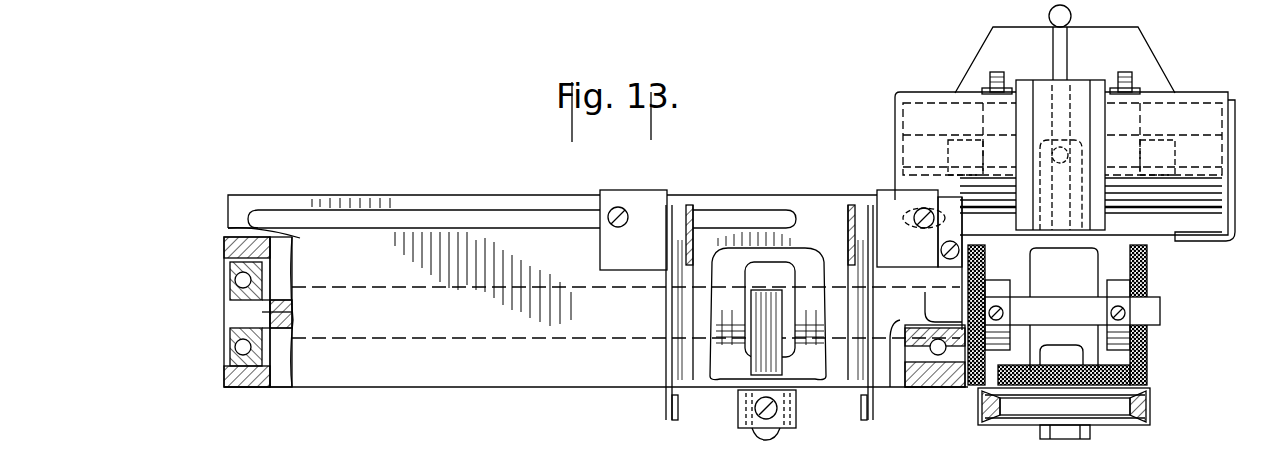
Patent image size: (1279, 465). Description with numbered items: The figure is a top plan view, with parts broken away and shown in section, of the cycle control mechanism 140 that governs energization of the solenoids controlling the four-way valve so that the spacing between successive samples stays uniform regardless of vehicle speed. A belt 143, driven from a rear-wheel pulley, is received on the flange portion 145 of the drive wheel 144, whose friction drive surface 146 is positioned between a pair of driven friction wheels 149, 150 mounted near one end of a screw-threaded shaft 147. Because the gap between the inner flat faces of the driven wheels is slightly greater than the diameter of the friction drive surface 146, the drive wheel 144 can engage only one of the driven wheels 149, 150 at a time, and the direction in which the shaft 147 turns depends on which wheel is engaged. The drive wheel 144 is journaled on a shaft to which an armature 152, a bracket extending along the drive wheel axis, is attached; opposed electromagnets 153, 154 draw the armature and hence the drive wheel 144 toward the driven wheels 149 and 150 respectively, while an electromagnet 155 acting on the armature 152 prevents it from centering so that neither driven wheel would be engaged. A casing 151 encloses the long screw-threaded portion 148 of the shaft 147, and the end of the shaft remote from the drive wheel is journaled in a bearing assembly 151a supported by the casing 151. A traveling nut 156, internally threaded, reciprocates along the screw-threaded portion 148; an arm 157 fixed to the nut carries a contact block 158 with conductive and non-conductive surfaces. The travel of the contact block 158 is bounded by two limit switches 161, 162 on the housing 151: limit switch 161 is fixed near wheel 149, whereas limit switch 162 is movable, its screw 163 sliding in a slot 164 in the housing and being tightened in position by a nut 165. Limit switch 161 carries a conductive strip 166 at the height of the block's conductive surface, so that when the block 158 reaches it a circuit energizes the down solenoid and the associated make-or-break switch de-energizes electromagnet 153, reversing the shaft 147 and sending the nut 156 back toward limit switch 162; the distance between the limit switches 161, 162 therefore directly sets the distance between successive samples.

The cycle control mechanism 140 is at (447, 190).
The slot 164 is at (352, 215).
The casing 151 is at (470, 385).
The screw-threaded shaft 147 is at (413, 340).
The bearing assembly 151a is at (230, 343).
The limit switch 162 is at (642, 189).
The screw 163 is at (608, 210).
The nut 165 is at (668, 420).
The conductive strip 166 is at (871, 420).
The traveling nut 156 is at (780, 273).
The arm 157 is at (766, 363).
The screw-threaded portion 148 is at (722, 362).
The contact block 158 is at (741, 427).
The limit switch 161 is at (880, 191).
The electromagnet 153 is at (895, 124).
The electromagnet 155 is at (1026, 82).
The electromagnet 154 is at (1232, 207).
The drive wheel 144 is at (1000, 432).
The armature 152 is at (1088, 285).
The friction drive surface 146 is at (1148, 372).
The driven friction wheel 150 is at (1150, 332).
The belt 143 is at (1150, 402).
The flange portion 145 is at (1115, 430).
The driven friction wheel 149 is at (975, 385).